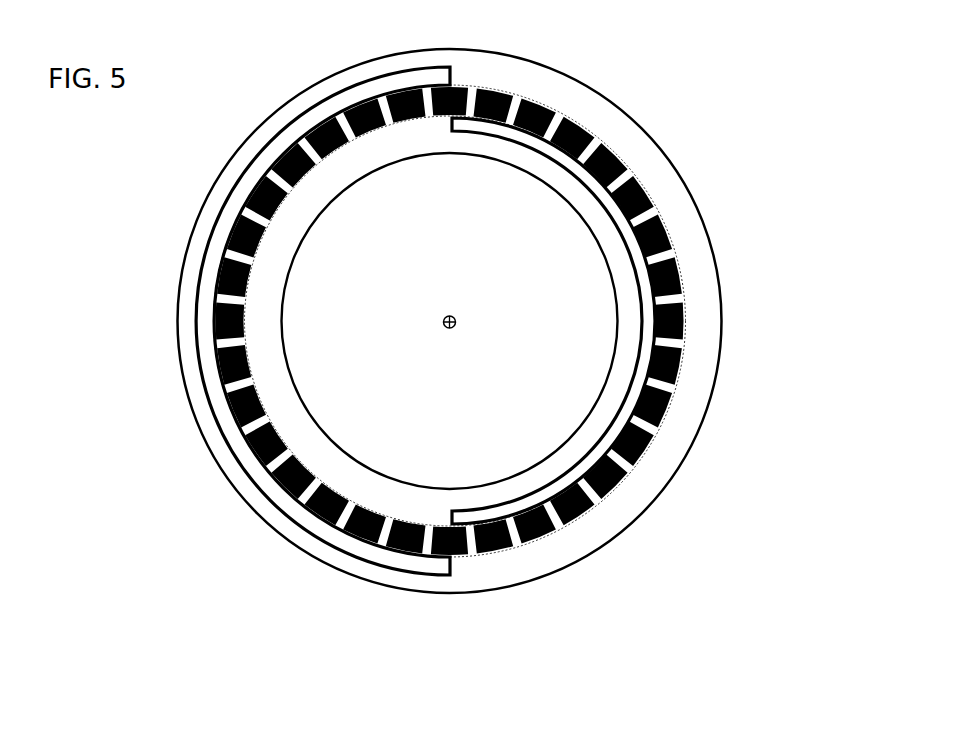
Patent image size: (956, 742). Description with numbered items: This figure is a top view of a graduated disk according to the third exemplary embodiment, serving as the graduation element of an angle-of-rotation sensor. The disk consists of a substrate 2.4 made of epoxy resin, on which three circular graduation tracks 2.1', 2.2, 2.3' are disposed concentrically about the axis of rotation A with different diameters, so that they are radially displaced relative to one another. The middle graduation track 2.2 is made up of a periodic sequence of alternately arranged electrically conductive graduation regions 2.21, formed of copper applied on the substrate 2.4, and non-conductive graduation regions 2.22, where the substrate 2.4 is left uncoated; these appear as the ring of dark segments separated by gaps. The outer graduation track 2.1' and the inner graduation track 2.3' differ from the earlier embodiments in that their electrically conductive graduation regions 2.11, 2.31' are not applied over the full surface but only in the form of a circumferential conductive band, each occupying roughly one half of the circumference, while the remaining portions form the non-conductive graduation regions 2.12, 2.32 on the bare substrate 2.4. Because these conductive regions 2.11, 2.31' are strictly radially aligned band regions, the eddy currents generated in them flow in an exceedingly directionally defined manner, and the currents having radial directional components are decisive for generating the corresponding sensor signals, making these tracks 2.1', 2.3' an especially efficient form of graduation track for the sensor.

The graduation track 2.1' is at (431, 350).
The electrically conductive graduation region 2.11 is at (220, 434).
The non-conductive graduation region 2.12 is at (604, 128).
The graduation track 2.2 is at (449, 321).
The electrically conductive graduation region 2.21 is at (245, 325).
The non-conductive graduation region 2.22 is at (248, 258).
The graduation track 2.3' is at (450, 321).
The electrically conductive graduation region 2.31' is at (450, 321).
The non-conductive graduation region 2.32 is at (352, 148).
The substrate 2.4 is at (406, 510).
The axis of rotation A is at (457, 318).